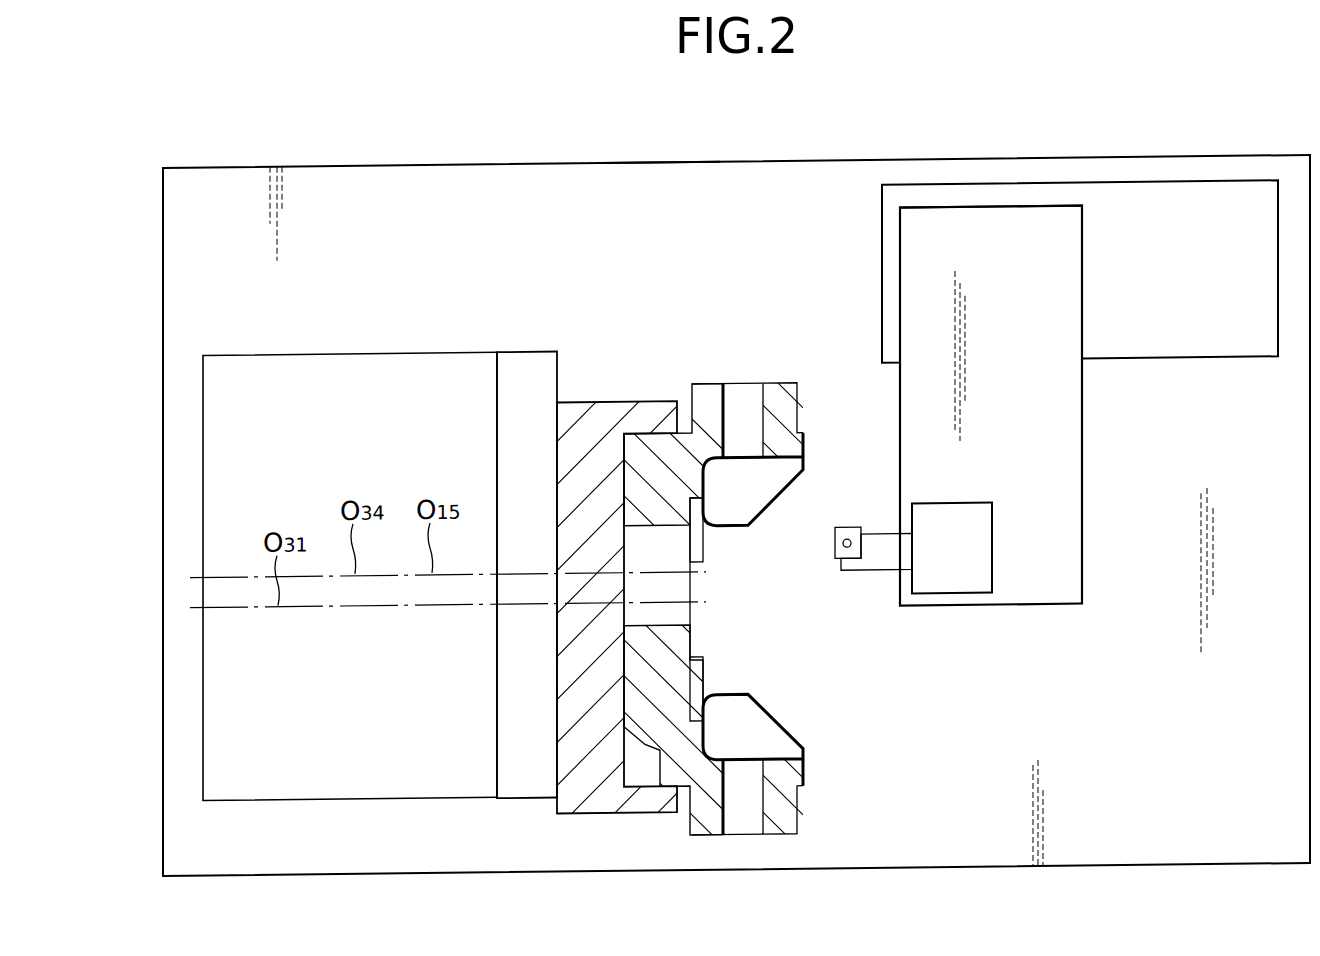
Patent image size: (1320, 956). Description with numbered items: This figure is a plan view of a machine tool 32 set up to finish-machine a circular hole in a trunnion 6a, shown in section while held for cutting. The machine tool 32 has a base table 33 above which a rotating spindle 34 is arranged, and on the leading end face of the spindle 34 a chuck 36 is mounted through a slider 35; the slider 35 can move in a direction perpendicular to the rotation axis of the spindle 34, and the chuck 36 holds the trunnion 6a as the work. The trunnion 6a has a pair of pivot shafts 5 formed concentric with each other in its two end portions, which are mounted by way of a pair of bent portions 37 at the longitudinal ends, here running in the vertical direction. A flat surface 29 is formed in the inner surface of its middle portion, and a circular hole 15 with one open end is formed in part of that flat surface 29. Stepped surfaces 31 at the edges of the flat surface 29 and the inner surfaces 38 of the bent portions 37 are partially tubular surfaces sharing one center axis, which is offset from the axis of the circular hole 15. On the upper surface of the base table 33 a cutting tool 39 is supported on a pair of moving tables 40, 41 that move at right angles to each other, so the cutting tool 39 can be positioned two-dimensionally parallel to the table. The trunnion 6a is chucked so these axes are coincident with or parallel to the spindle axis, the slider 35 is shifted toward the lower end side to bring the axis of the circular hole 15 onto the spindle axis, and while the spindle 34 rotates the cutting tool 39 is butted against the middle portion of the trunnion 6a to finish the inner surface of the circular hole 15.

The machine tool 32 is at (403, 181).
The base table 33 is at (651, 176).
The rotating spindle 34 is at (387, 383).
The slider 35 is at (527, 367).
The chuck 36 is at (594, 415).
The trunnion 6a is at (657, 460).
The pivot shaft 5 is at (777, 400).
The bent portion 37 is at (797, 458).
The inner surface 38 is at (757, 505).
The stepped surface 31 is at (704, 540).
The circular hole 15 is at (674, 632).
The flat surface 29 is at (693, 656).
The cutting tool 39 is at (874, 568).
The moving table 40 is at (1217, 360).
The moving table 41 is at (1068, 511).